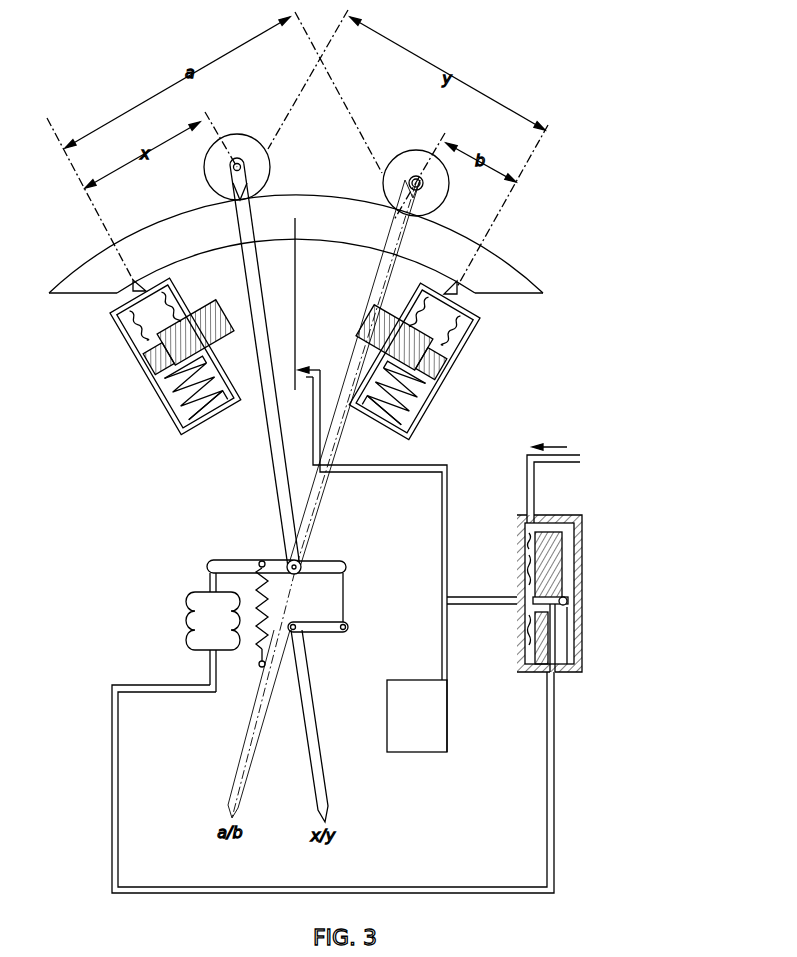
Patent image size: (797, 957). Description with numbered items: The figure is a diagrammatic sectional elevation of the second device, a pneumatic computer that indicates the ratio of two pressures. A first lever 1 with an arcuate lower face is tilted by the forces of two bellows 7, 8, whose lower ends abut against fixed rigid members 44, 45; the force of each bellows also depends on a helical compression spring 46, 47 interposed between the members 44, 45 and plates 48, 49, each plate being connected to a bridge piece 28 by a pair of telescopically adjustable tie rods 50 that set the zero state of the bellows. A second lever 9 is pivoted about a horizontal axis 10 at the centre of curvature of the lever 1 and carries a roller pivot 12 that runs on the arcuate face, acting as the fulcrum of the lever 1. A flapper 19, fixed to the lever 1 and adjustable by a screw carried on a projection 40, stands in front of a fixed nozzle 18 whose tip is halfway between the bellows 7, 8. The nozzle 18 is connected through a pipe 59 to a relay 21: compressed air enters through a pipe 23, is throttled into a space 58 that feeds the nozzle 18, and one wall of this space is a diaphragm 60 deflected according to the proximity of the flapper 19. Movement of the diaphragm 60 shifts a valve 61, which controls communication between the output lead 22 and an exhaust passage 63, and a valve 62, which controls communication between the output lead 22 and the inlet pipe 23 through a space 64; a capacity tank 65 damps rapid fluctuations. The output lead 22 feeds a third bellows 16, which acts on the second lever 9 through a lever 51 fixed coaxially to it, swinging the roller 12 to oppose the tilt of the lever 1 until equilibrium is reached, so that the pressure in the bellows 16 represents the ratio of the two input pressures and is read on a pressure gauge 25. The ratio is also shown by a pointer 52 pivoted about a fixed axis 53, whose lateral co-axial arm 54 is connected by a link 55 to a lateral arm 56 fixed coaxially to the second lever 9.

The first lever 1 is at (186, 218).
The bellows 7 is at (188, 349).
The bellows 8 is at (402, 354).
The second lever 9 is at (283, 226).
The horizontal axis 10 is at (302, 562).
The roller pivot 12 is at (238, 140).
The third bellows 16 is at (190, 621).
The nozzle 18 is at (303, 366).
The flapper 19 is at (297, 313).
The relay 21 is at (580, 536).
The output lead 22 is at (283, 887).
The pipe 23 is at (563, 465).
The pressure gauge 25 is at (258, 650).
The bridge piece 28 is at (118, 300).
The projection 40 is at (525, 532).
The fixed rigid member 44 is at (178, 330).
The fixed rigid member 45 is at (445, 355).
The helical compression spring 46 is at (175, 395).
The helical compression spring 47 is at (410, 400).
The plate 48 is at (200, 425).
The plate 49 is at (386, 432).
The tie rod 50 is at (183, 299).
The lever 51 is at (238, 561).
The pointer 52 is at (312, 698).
The fixed axis 53 is at (297, 623).
The lateral co-axial arm 54 is at (331, 630).
The link 55 is at (345, 601).
The lateral arm 56 is at (332, 568).
The space 58 is at (528, 632).
The pipe 59 is at (442, 497).
The diaphragm 60 is at (533, 563).
The valve 61 is at (562, 597).
The valve 62 is at (566, 605).
The exhaust passage 63 is at (527, 670).
The space 64 is at (570, 660).
The capacity tank 65 is at (398, 735).